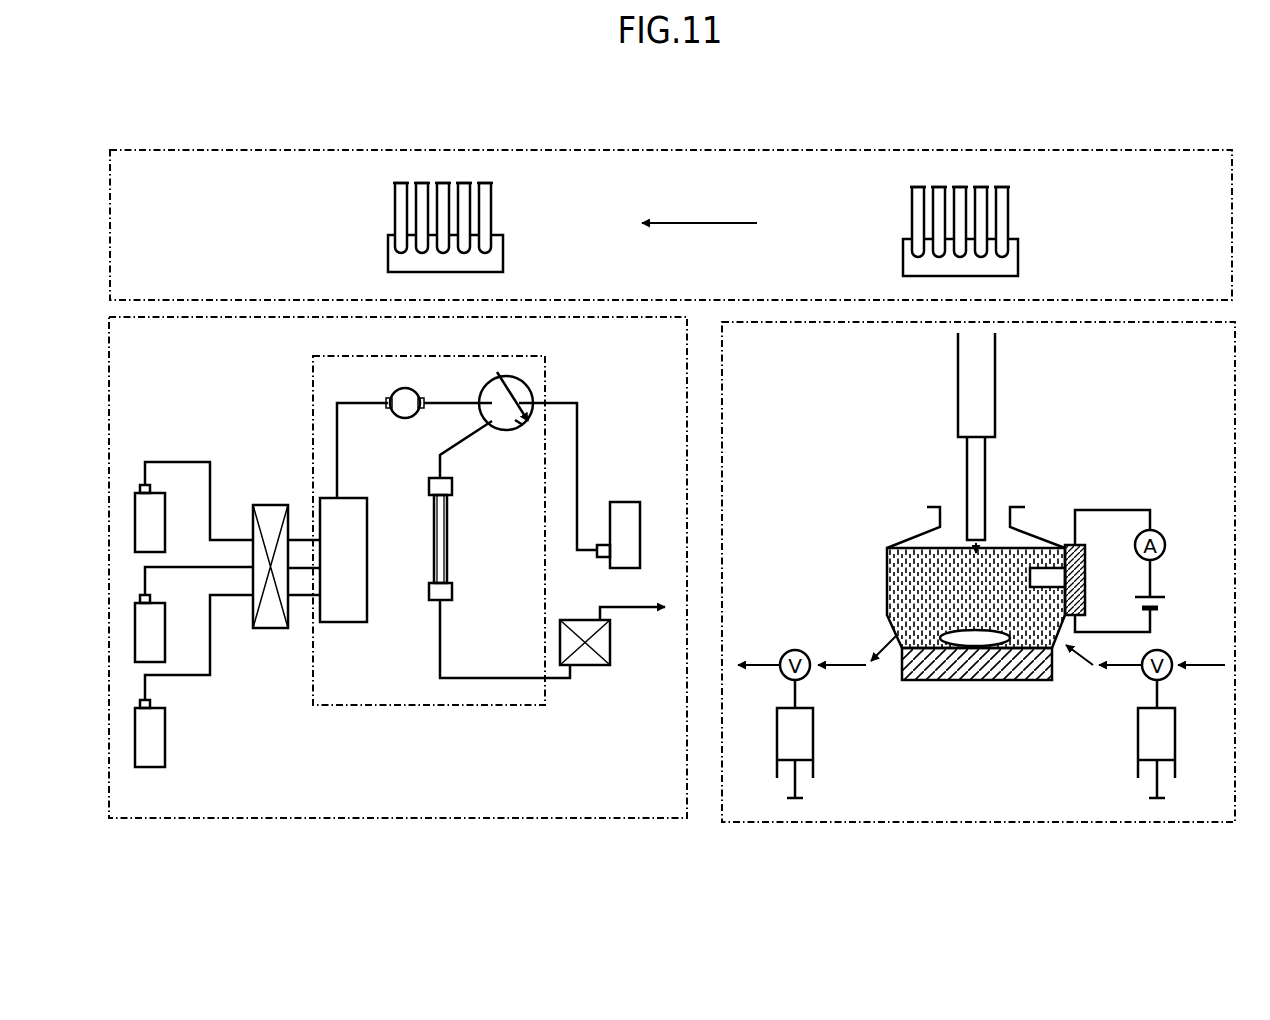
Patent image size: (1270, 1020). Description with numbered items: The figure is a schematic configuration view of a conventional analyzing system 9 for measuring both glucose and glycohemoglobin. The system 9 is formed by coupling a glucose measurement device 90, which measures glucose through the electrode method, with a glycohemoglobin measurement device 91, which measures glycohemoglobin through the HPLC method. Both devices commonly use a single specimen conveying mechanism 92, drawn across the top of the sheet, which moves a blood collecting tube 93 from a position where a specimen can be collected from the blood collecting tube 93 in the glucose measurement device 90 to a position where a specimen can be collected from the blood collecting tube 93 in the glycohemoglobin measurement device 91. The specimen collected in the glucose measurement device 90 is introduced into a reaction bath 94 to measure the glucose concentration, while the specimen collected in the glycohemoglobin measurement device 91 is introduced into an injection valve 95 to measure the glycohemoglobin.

The analyzing system 9 is at (672, 485).
The glucose measurement device 90 is at (934, 826).
The glycohemoglobin measurement device 91 is at (334, 826).
The specimen conveying mechanism 92 is at (529, 150).
The blood collecting tube 93 is at (400, 201).
The reaction bath 94 is at (887, 571).
The injection valve 95 is at (507, 431).